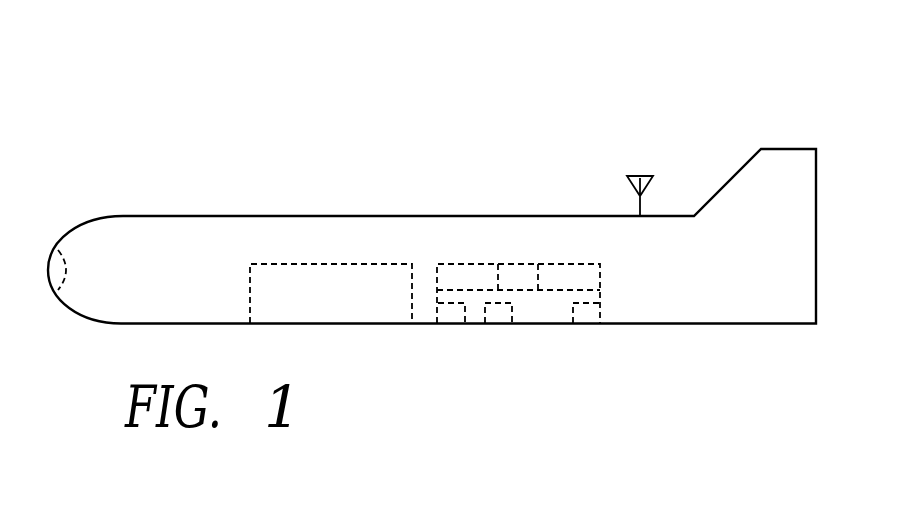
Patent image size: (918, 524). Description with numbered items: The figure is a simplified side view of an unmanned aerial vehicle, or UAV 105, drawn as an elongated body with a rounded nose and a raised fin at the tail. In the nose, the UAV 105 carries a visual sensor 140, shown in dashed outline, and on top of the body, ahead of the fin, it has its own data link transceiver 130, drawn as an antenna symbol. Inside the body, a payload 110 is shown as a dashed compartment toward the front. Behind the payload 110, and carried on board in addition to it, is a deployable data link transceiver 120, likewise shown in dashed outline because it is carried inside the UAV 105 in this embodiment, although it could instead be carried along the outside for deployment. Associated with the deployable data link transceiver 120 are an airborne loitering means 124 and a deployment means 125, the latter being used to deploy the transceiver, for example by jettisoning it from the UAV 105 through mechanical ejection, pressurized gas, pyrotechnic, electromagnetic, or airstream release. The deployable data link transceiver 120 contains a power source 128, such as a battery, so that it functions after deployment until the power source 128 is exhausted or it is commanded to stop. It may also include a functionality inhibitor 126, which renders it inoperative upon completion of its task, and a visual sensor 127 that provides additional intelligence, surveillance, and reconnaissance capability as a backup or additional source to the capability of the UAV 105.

The unmanned aerial vehicle 105 is at (196, 180).
The payload 110 is at (337, 263).
The deployable data link transceiver 120 is at (542, 317).
The airborne loitering means 124 is at (458, 271).
The deployment means 125 is at (525, 271).
The functionality inhibitor 126 is at (502, 315).
The visual sensor 127 is at (455, 315).
The power source 128 is at (587, 315).
The data link transceiver 130 is at (634, 176).
The visual sensor 140 is at (65, 260).